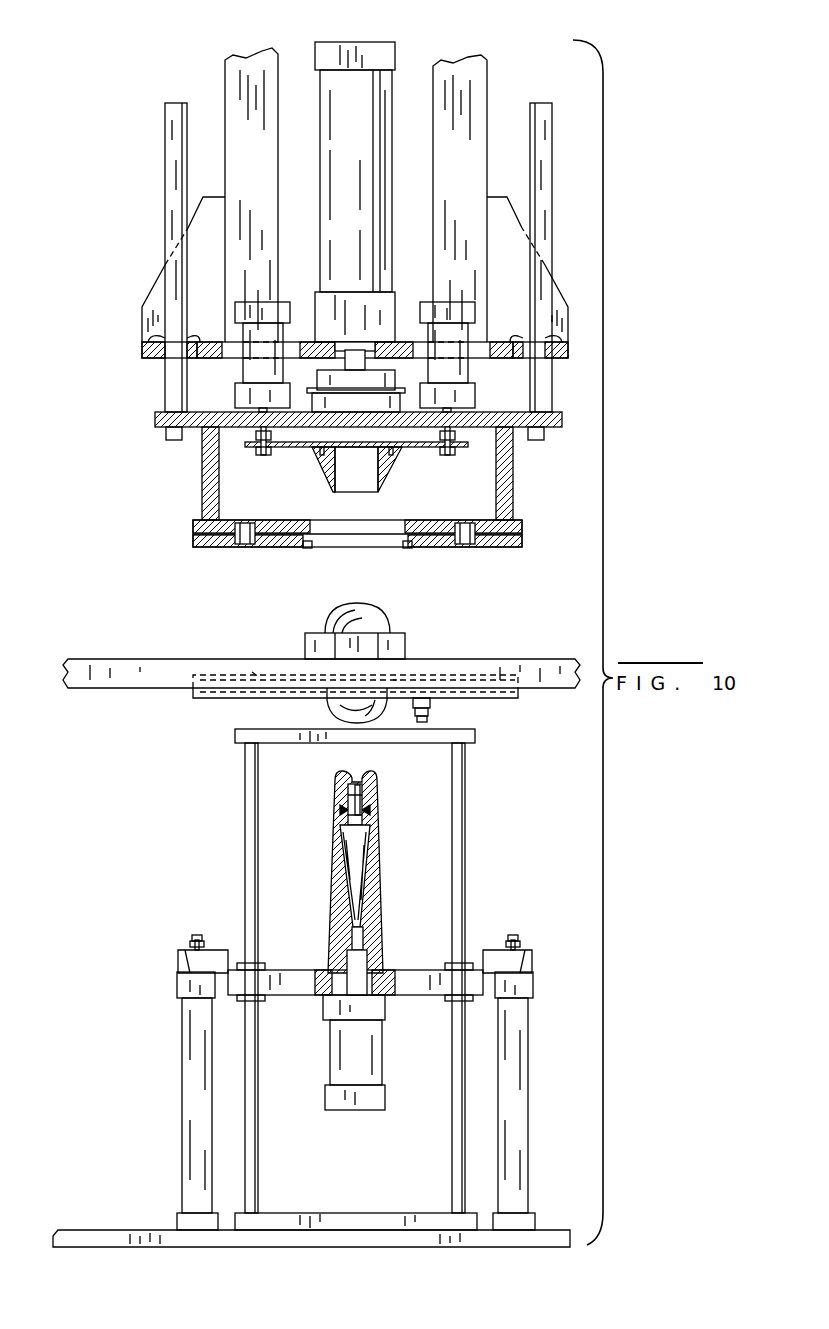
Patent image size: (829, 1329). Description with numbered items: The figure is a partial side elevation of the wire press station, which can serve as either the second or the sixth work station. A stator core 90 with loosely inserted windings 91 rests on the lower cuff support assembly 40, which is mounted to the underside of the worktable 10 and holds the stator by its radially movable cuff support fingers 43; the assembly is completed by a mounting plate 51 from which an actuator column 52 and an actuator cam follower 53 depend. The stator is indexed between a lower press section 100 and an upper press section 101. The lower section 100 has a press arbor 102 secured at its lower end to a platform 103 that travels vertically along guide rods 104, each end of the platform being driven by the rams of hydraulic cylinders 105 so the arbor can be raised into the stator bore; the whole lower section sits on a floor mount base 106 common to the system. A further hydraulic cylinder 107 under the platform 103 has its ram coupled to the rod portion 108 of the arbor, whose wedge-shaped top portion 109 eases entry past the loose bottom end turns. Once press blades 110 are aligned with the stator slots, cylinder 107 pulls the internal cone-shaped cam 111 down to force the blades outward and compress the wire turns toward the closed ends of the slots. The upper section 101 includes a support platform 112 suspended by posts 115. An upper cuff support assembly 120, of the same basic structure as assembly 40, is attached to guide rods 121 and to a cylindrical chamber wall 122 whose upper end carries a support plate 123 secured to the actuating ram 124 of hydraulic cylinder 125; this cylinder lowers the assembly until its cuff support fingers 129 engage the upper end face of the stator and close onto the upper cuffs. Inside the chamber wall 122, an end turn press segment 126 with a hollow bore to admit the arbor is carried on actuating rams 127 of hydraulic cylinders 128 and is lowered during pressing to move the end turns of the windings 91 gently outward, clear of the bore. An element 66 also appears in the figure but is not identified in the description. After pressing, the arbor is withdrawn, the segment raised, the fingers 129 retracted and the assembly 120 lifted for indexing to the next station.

The worktable 10 is at (540, 659).
The cuff support assembly 40 is at (222, 702).
The cuff support fingers 43 is at (395, 682).
The mounting plate 51 is at (432, 703).
The actuator column 52 is at (429, 712).
The actuator cam follower 53 is at (428, 721).
The locating hole 66 is at (252, 672).
The stator core 90 is at (405, 641).
The windings 91 is at (355, 605).
The lower press section 100 is at (144, 937).
The upper press section 101 is at (132, 463).
The press arbor 102 is at (389, 854).
The platform 103 is at (413, 996).
The guide rods 104 is at (245, 888).
The hydraulic cylinders 105 is at (190, 1060).
The floor mount base 106 is at (133, 1232).
The hydraulic cylinder 107 is at (340, 1058).
The rod portion 108 is at (367, 962).
The arbor insert nose 109 is at (372, 778).
The press blades 110 is at (332, 870).
The cone-shaped cam 111 is at (350, 852).
The support platform 112 is at (142, 353).
The posts 115 is at (229, 72).
The upper cuff support assembly 120 is at (476, 552).
The guide rods 121 is at (173, 133).
The cylindrical chamber wall 122 is at (514, 487).
The support plate 123 is at (155, 418).
The actuating ram 124 is at (350, 367).
The hydraulic cylinder 125 is at (370, 88).
The end turn press segment 126 is at (388, 470).
The actuating rams 127 is at (257, 431).
The hydraulic cylinders 128 is at (257, 372).
The cuff support fingers 129 is at (310, 548).